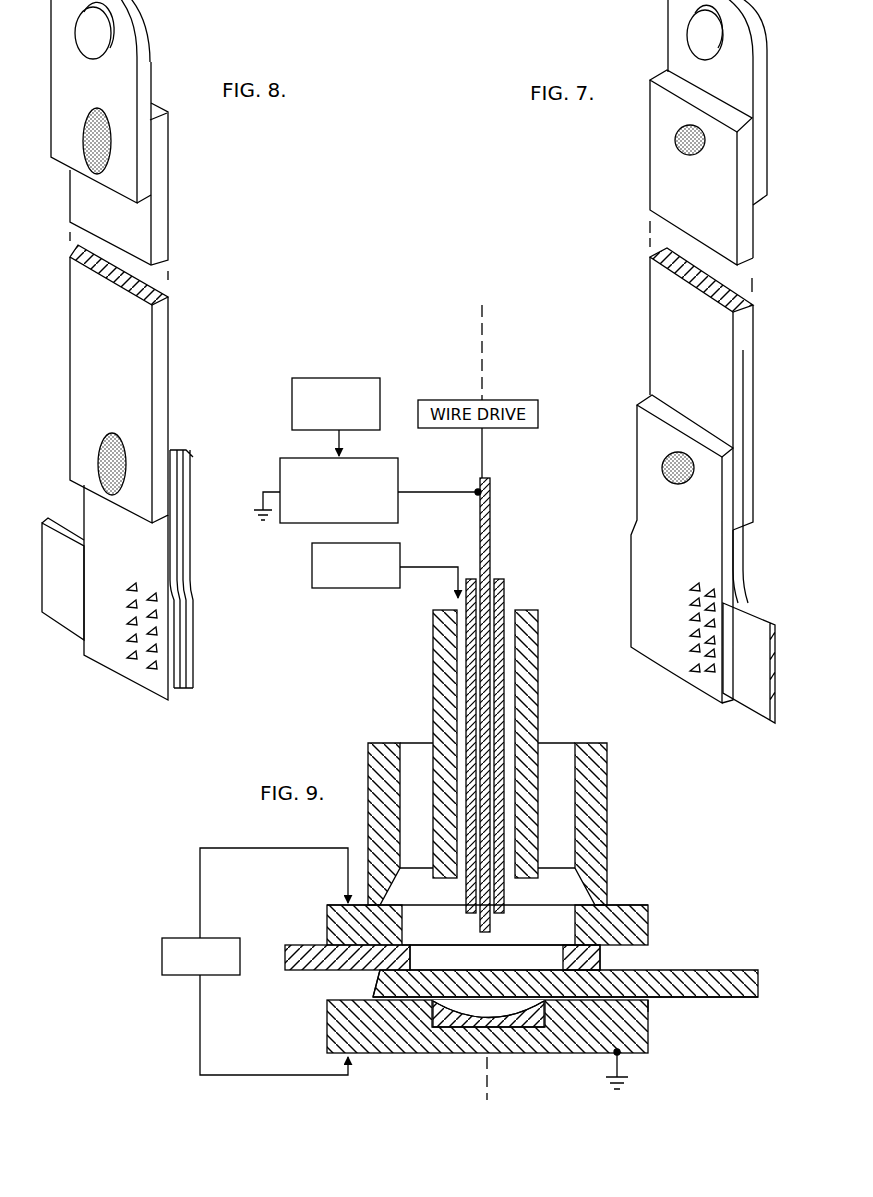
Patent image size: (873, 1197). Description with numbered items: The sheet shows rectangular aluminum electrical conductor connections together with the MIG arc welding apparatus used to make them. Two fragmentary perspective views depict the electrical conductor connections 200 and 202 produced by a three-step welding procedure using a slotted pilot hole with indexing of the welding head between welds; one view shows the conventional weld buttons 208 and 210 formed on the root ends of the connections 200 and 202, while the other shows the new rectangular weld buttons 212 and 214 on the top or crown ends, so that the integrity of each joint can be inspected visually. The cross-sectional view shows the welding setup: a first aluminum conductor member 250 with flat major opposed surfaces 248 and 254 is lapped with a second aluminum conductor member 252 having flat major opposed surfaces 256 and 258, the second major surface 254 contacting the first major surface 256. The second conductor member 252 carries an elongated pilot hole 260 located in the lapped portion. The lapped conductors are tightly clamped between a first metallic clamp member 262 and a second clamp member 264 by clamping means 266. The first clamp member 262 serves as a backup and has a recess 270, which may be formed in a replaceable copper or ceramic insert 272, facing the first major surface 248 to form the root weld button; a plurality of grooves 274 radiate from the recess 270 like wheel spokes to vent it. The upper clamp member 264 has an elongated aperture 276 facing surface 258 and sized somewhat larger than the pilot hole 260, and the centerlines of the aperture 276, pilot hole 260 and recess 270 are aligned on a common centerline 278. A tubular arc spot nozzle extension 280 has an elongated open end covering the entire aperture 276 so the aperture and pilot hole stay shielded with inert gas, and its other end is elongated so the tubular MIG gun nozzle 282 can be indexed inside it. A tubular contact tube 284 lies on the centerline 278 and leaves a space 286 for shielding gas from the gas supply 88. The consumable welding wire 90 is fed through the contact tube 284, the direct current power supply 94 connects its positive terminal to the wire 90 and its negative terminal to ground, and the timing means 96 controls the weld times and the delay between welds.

In FIG. 8, the electrical conductor connection 200 is at (149, 140).
In FIG. 7, the electrical conductor connection 200 is at (678, 146).
In FIG. 8, the electrical conductor connection 202 is at (110, 472).
In FIG. 7, the electrical conductor connection 202 is at (687, 485).
In FIG. 7, the weld button 208 is at (676, 146).
In FIG. 7, the weld button 210 is at (673, 486).
In FIG. 8, the rectangular weld button 212 is at (112, 143).
In FIG. 8, the rectangular weld button 214 is at (108, 433).
In FIG. 9, the centerline 278 is at (481, 338).
In FIG. 9, the timing means 96 is at (380, 397).
In FIG. 9, the direct current power supply 94 is at (398, 507).
In FIG. 9, the welding wire 90 is at (490, 518).
In FIG. 9, the gas supply 88 is at (348, 589).
In FIG. 9, the contact tube 284 is at (503, 593).
In FIG. 9, the space 286 is at (512, 635).
In FIG. 9, the MIG gun nozzle 282 is at (506, 733).
In FIG. 9, the arc spot nozzle extension 280 is at (600, 830).
In FIG. 9, the elongated aperture 276 is at (525, 920).
In FIG. 9, the second clamp member 264 is at (648, 928).
In FIG. 9, the second major surface 258 is at (312, 945).
In FIG. 9, the second aluminum conductor member 252 is at (471, 943).
In FIG. 9, the first major surface 256 is at (300, 971).
In FIG. 9, the elongated pilot hole 260 is at (552, 960).
In FIG. 9, the second major surface 254 is at (700, 970).
In FIG. 9, the first aluminum conductor member 250 is at (572, 991).
In FIG. 9, the first major surface 248 is at (735, 987).
In FIG. 9, the first clamp member 262 is at (518, 1044).
In FIG. 9, the recess 270 is at (463, 1020).
In FIG. 9, the insert 272 is at (520, 1020).
In FIG. 9, the grooves 274 is at (335, 1000).
In FIG. 9, the clamping means 266 is at (180, 938).